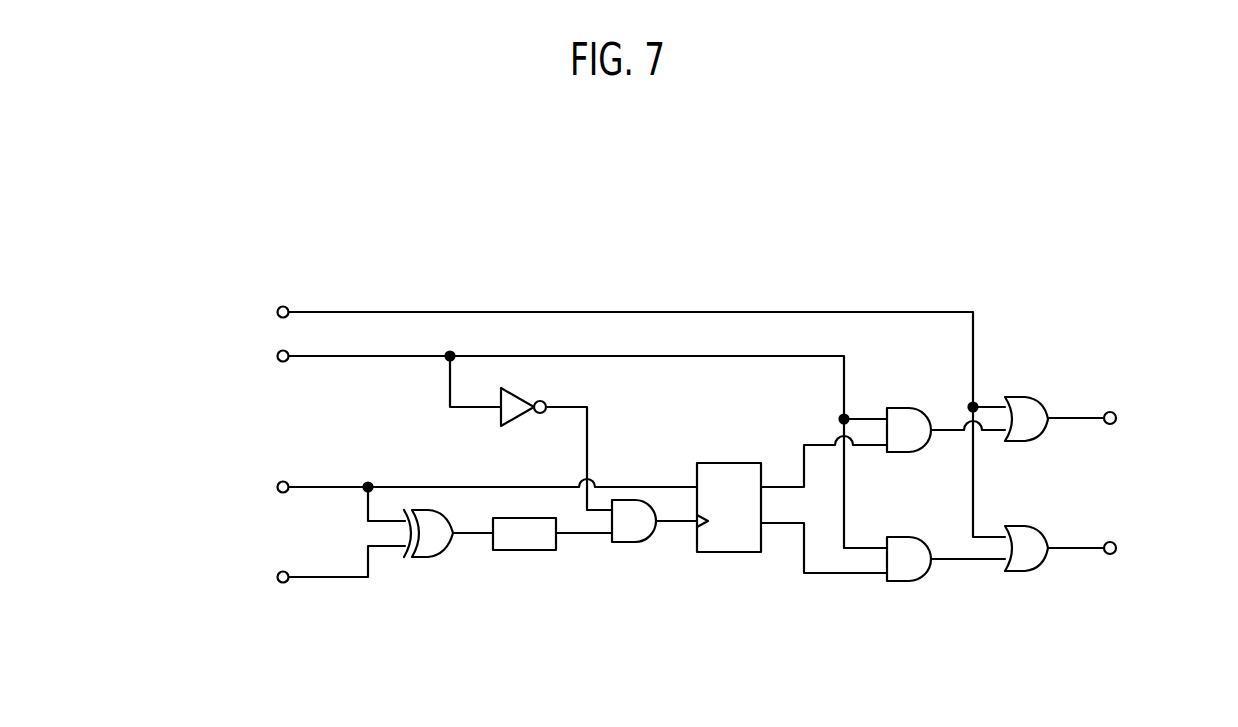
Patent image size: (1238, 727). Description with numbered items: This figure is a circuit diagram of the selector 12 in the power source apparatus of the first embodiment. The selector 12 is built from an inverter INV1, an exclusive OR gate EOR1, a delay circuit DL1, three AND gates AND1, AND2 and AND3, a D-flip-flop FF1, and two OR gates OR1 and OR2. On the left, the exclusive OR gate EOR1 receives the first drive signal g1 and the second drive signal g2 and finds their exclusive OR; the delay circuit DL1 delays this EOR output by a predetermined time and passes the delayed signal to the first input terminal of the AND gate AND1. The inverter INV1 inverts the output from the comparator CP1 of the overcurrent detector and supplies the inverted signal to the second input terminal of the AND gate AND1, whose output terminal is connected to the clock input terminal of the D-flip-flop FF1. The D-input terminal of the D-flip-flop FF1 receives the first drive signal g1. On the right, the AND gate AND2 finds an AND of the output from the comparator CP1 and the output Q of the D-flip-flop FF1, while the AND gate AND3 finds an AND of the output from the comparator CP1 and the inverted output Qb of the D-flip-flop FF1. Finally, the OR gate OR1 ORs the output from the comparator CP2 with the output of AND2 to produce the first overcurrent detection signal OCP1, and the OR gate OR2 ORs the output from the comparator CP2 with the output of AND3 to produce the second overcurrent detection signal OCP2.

The selector 12 is at (752, 246).
The comparator CP2 is at (560, 417).
The comparator CP1 is at (501, 445).
The first drive signal g1 is at (469, 496).
The second drive signal g2 is at (323, 569).
The inverter INV1 is at (556, 435).
The exclusive OR gate EOR1 is at (444, 552).
The delay circuit DL1 is at (552, 534).
The AND gate AND1 is at (650, 539).
The D-flip-flop FF1 is at (792, 502).
The AND gate AND2 is at (944, 413).
The AND gate AND3 is at (944, 543).
The OR gate OR1 is at (1053, 403).
The OR gate OR2 is at (1053, 533).
The first overcurrent detection signal OCP1 is at (1144, 419).
The second overcurrent detection signal OCP2 is at (1144, 549).